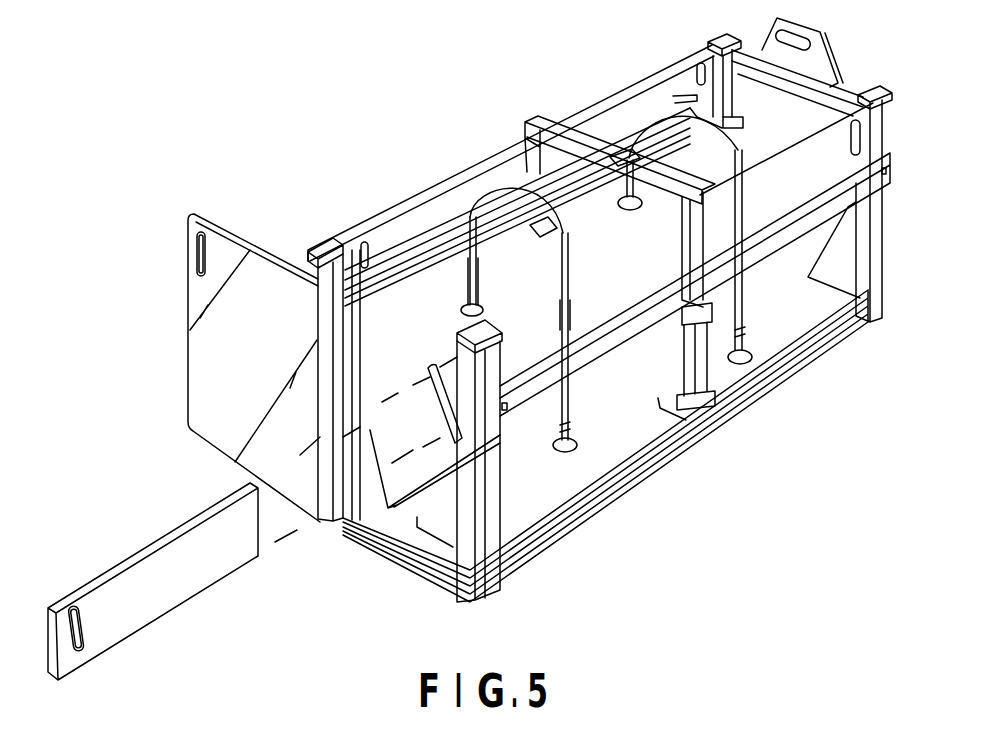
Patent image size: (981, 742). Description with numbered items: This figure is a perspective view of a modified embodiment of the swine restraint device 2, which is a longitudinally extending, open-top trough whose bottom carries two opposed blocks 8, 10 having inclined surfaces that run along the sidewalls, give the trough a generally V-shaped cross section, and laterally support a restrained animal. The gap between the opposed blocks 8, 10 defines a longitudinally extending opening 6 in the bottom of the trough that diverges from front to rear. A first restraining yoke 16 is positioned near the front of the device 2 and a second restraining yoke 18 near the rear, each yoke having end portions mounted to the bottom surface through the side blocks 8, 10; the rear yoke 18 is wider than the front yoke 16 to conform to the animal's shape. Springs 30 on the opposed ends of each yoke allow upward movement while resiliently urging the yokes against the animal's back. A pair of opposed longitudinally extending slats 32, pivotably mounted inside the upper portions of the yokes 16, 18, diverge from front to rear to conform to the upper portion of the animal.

The swine restraint device 2 is at (622, 540).
The opening 6 is at (415, 503).
The block 8 is at (445, 523).
The block 10 is at (352, 539).
The first restraining yoke 16 is at (497, 192).
The second restraining yoke 18 is at (660, 107).
The springs 30 is at (572, 432).
The slats 32 is at (553, 168).